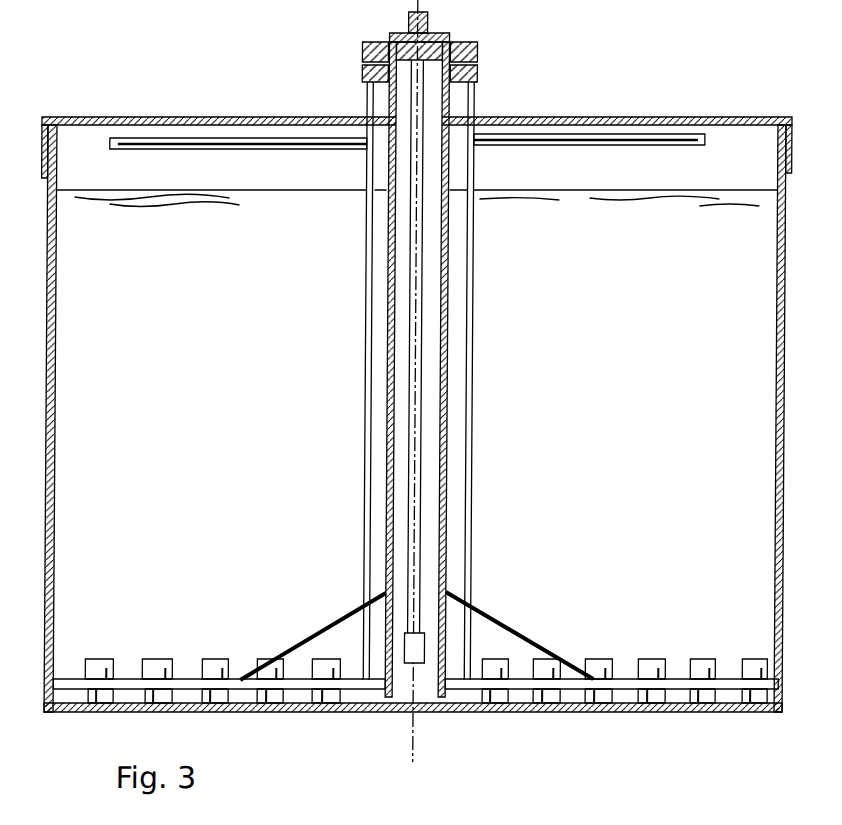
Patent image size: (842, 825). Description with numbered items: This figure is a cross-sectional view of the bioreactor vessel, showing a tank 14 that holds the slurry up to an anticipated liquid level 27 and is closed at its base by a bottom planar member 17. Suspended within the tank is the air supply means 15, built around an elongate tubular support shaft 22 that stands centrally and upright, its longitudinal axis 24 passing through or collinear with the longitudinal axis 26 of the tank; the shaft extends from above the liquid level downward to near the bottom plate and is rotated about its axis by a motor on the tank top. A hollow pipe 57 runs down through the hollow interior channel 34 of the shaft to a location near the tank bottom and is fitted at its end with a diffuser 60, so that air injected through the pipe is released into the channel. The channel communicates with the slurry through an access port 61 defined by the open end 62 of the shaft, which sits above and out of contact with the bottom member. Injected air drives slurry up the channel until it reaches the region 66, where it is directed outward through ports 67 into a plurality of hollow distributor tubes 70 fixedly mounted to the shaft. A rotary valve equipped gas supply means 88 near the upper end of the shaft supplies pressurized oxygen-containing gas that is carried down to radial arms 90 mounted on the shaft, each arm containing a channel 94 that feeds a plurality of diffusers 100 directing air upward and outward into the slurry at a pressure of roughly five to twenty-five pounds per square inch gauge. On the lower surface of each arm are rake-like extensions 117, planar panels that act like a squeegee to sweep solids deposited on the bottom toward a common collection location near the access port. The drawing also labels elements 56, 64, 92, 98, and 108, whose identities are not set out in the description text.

The tank 14 is at (57, 349).
The air supply means 15 is at (388, 458).
The bottom planar member 17 is at (762, 712).
The support shaft 22 is at (450, 362).
The longitudinal axis 24 is at (418, 748).
The longitudinal axis of the tank 26 is at (418, 232).
The liquid level 27 is at (205, 190).
The hollow interior channel 34 is at (432, 472).
The tube wall 56 is at (436, 285).
The hollow pipe 57 is at (428, 527).
The diffuser 60 is at (462, 600).
The access port 61 is at (442, 705).
The open end 62 is at (392, 705).
The top flange 64 is at (55, 128).
The region 66 is at (433, 142).
The ports 67 is at (448, 170).
The hollow distributor tubes 70 is at (262, 150).
The rotary valve equipped gas supply means 88 is at (362, 50).
The radial arm 90 is at (285, 705).
The spacer 92 is at (340, 705).
The channel 94 is at (246, 680).
The block 98 is at (600, 662).
The diffusers 100 is at (218, 658).
The connection 108 is at (367, 150).
The rake-like extensions 117 is at (110, 702).